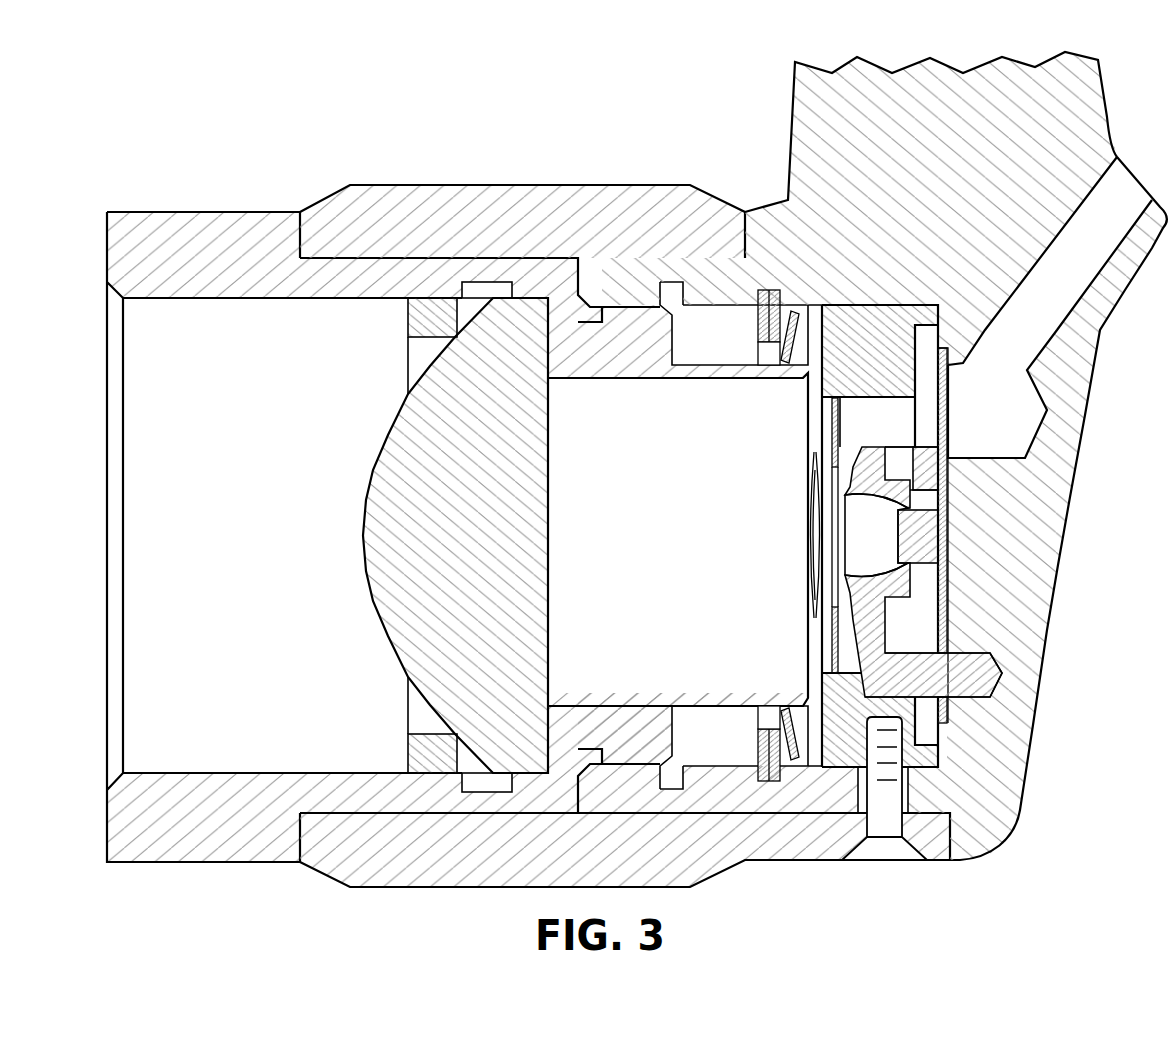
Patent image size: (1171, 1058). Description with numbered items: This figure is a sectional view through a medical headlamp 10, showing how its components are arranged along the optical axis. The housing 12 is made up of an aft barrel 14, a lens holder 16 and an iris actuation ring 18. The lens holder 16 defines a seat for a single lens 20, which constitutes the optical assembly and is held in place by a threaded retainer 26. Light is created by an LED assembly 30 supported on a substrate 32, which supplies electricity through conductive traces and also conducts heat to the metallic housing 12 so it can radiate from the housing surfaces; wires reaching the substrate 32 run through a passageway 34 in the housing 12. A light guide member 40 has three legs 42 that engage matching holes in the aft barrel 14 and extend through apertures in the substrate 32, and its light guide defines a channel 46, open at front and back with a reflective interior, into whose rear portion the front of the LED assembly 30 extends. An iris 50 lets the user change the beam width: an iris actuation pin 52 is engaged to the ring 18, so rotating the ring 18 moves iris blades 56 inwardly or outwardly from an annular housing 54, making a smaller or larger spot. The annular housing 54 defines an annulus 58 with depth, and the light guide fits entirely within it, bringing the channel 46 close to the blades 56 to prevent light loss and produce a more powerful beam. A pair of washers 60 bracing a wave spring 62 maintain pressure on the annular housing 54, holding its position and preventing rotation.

The medical headlamp 10 is at (353, 101).
The housing 12 is at (436, 184).
The aft barrel 14 is at (1074, 498).
The lens holder 16 is at (212, 211).
The iris actuation ring 18 is at (522, 185).
The lens 20 is at (444, 554).
The threaded retainer 26 is at (426, 339).
The LED assembly 30 is at (940, 572).
The substrate 32 is at (949, 418).
The passageway 34 is at (1067, 297).
The light guide member 40 is at (851, 639).
The legs 42 is at (1003, 680).
The channel 46 is at (858, 554).
The iris 50 is at (880, 302).
The iris actuation pin 52 is at (883, 857).
The annular housing 54 is at (820, 741).
The iris blades 56 is at (832, 440).
The annulus 58 is at (862, 435).
The washers 60 is at (756, 324).
The wave spring 62 is at (800, 331).